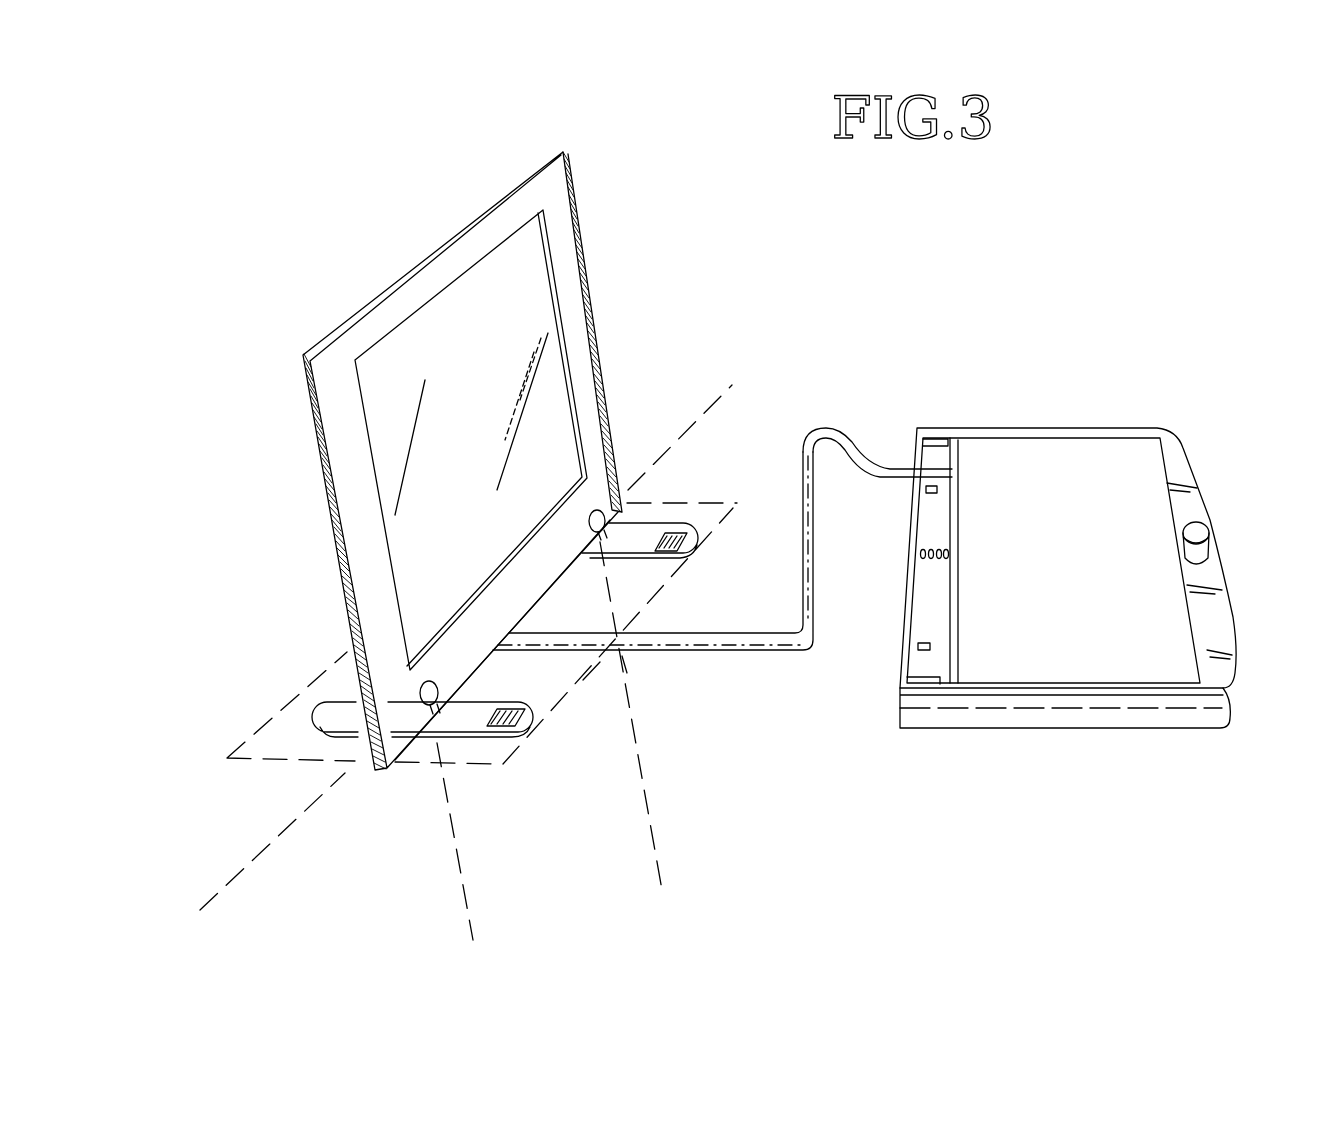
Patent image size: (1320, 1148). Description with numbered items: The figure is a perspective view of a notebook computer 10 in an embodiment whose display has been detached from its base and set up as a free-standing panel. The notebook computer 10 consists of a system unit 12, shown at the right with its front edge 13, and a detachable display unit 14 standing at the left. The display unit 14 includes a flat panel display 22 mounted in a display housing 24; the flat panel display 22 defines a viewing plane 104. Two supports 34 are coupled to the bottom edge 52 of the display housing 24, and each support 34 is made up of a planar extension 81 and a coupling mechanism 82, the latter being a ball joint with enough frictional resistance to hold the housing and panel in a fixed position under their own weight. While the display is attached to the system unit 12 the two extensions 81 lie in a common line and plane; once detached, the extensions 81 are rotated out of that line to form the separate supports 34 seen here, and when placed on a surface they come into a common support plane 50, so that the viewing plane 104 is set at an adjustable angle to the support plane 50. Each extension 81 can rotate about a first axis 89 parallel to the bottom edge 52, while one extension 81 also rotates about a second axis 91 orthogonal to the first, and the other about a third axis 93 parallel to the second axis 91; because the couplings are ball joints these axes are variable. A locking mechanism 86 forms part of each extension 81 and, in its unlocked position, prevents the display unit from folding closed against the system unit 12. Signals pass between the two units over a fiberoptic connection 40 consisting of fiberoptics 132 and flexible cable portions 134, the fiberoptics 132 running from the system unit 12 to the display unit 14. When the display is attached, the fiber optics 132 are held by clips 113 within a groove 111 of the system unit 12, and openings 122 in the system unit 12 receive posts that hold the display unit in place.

The notebook computer 10 is at (1190, 293).
The system unit 12 is at (1220, 421).
The front edge 13 is at (1207, 497).
The detachable display unit 14 is at (588, 182).
The flat panel display 22 is at (557, 302).
The display housing 24 is at (597, 338).
The support 34 is at (718, 502).
The fiberoptic connection 40 is at (793, 672).
The support plane 50 is at (585, 679).
The bottom edge 52 is at (537, 610).
The planar extension 81 is at (660, 522).
The coupling mechanism 82 is at (588, 527).
The locking mechanism 86 is at (527, 717).
The first axis 89 is at (732, 383).
The second axis 91 is at (460, 870).
The third axis 93 is at (648, 828).
The viewing plane 104 is at (482, 425).
The groove 111 is at (940, 585).
The clips 113 is at (940, 547).
The openings 122 is at (937, 490).
The fiberoptics 132 is at (818, 548).
The flexible cable portions 134 is at (842, 440).